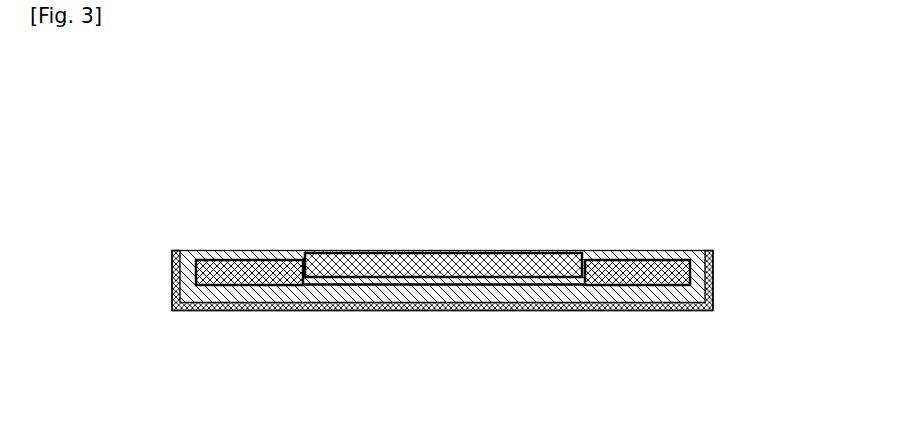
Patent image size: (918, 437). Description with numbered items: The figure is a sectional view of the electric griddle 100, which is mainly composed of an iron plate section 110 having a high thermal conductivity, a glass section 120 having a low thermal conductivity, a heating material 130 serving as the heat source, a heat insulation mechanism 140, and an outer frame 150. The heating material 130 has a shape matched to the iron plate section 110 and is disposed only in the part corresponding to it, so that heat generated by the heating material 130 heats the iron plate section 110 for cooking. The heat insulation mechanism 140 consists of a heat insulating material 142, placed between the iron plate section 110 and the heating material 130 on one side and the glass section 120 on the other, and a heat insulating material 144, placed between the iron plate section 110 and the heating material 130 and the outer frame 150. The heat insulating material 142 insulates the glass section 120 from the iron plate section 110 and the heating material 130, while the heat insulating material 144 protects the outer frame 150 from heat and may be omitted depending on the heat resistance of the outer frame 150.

The electric griddle 100 is at (444, 73).
The iron plate section 110 is at (228, 251).
The glass section 120 is at (427, 250).
The heating material 130 is at (171, 281).
The heat insulation mechanism 140 is at (687, 333).
The heat insulating material 142 is at (583, 311).
The heat insulating material 144 is at (622, 300).
The outer frame 150 is at (293, 311).